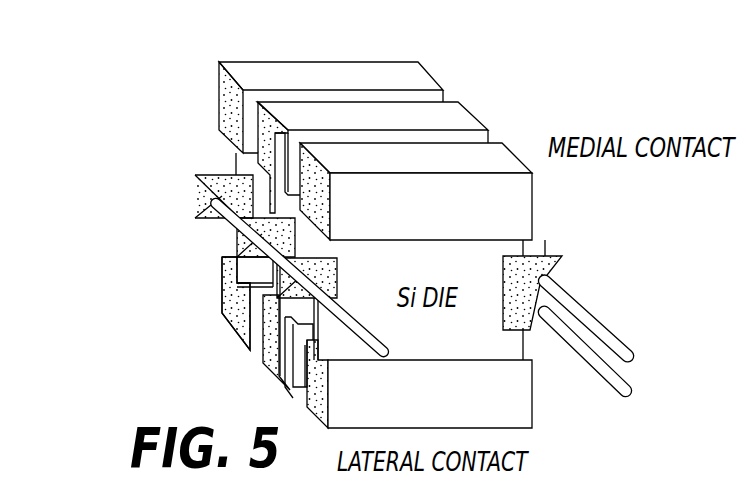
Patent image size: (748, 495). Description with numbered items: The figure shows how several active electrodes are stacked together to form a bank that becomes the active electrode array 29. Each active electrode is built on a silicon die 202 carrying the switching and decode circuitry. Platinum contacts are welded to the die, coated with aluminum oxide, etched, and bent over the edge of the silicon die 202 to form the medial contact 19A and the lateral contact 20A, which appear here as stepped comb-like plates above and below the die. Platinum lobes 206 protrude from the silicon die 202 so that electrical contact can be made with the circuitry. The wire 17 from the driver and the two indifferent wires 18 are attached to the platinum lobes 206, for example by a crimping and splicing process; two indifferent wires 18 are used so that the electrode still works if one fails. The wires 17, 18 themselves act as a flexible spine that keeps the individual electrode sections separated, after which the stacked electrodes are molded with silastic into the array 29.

The active electrode array 29 is at (154, 138).
The medial contact 19A is at (415, 112).
The platinum lobe 206 is at (195, 201).
The indifferent wire 18 is at (607, 330).
The wire 17 is at (356, 327).
The lateral contact 20A is at (278, 373).
The silicon die 202 is at (470, 345).